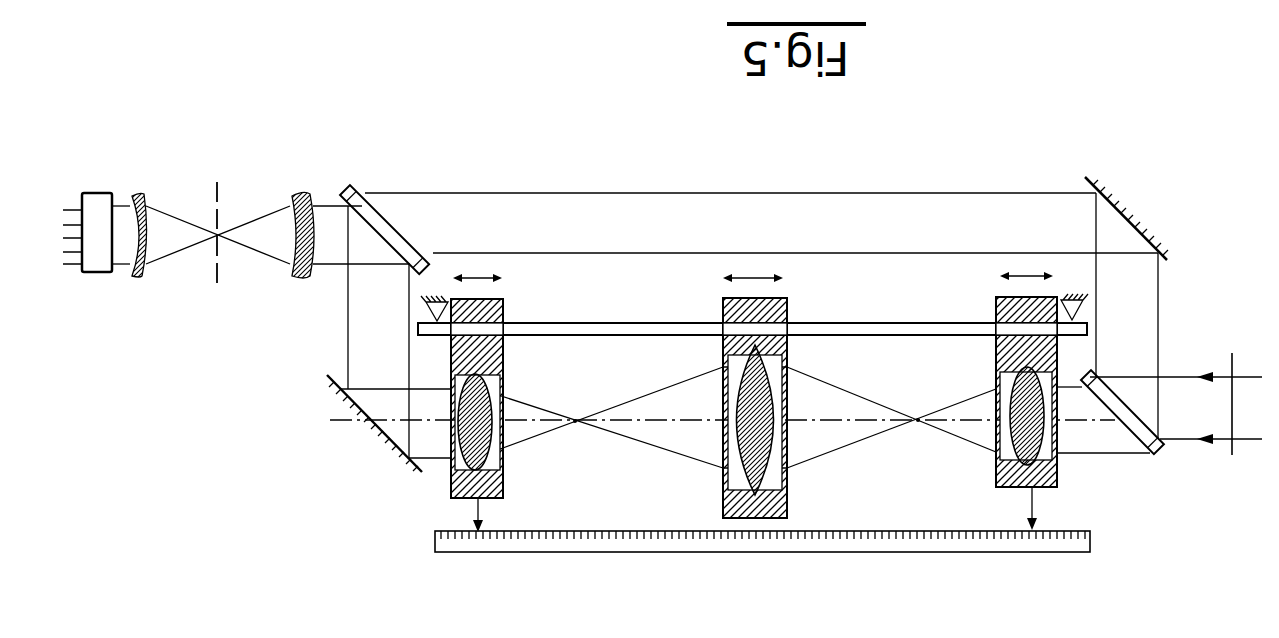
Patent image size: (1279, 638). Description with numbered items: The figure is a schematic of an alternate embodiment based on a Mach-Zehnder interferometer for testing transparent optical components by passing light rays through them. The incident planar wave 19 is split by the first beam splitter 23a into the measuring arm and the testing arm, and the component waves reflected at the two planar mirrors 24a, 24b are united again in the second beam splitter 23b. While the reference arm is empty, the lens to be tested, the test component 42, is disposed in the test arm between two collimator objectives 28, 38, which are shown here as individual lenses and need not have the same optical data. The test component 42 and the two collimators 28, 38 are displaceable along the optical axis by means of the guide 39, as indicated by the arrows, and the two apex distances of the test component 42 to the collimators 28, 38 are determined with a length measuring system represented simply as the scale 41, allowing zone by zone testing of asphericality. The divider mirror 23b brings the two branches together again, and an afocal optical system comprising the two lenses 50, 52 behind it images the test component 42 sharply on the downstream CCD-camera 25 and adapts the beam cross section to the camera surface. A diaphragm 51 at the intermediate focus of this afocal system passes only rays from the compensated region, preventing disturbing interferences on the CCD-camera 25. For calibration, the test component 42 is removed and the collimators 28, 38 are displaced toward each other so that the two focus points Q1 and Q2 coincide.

The planar wave 19 is at (1232, 353).
The first beam splitter 23a is at (1158, 456).
The second beam splitter 23b is at (353, 183).
The planar mirror 24a is at (1115, 200).
The planar mirror 24b is at (357, 415).
The CCD-camera 25 is at (97, 213).
The collimator objective 28 is at (1000, 456).
The collimator objective 38 is at (452, 460).
The guide 39 is at (864, 330).
The scale 41 is at (435, 546).
The test component 42 is at (736, 482).
The lens of afocal optical system 50 is at (302, 193).
The diaphragm 51 is at (218, 194).
The lens of afocal optical system 52 is at (140, 268).
The focus point Q1 is at (918, 422).
The focus point Q2 is at (575, 423).